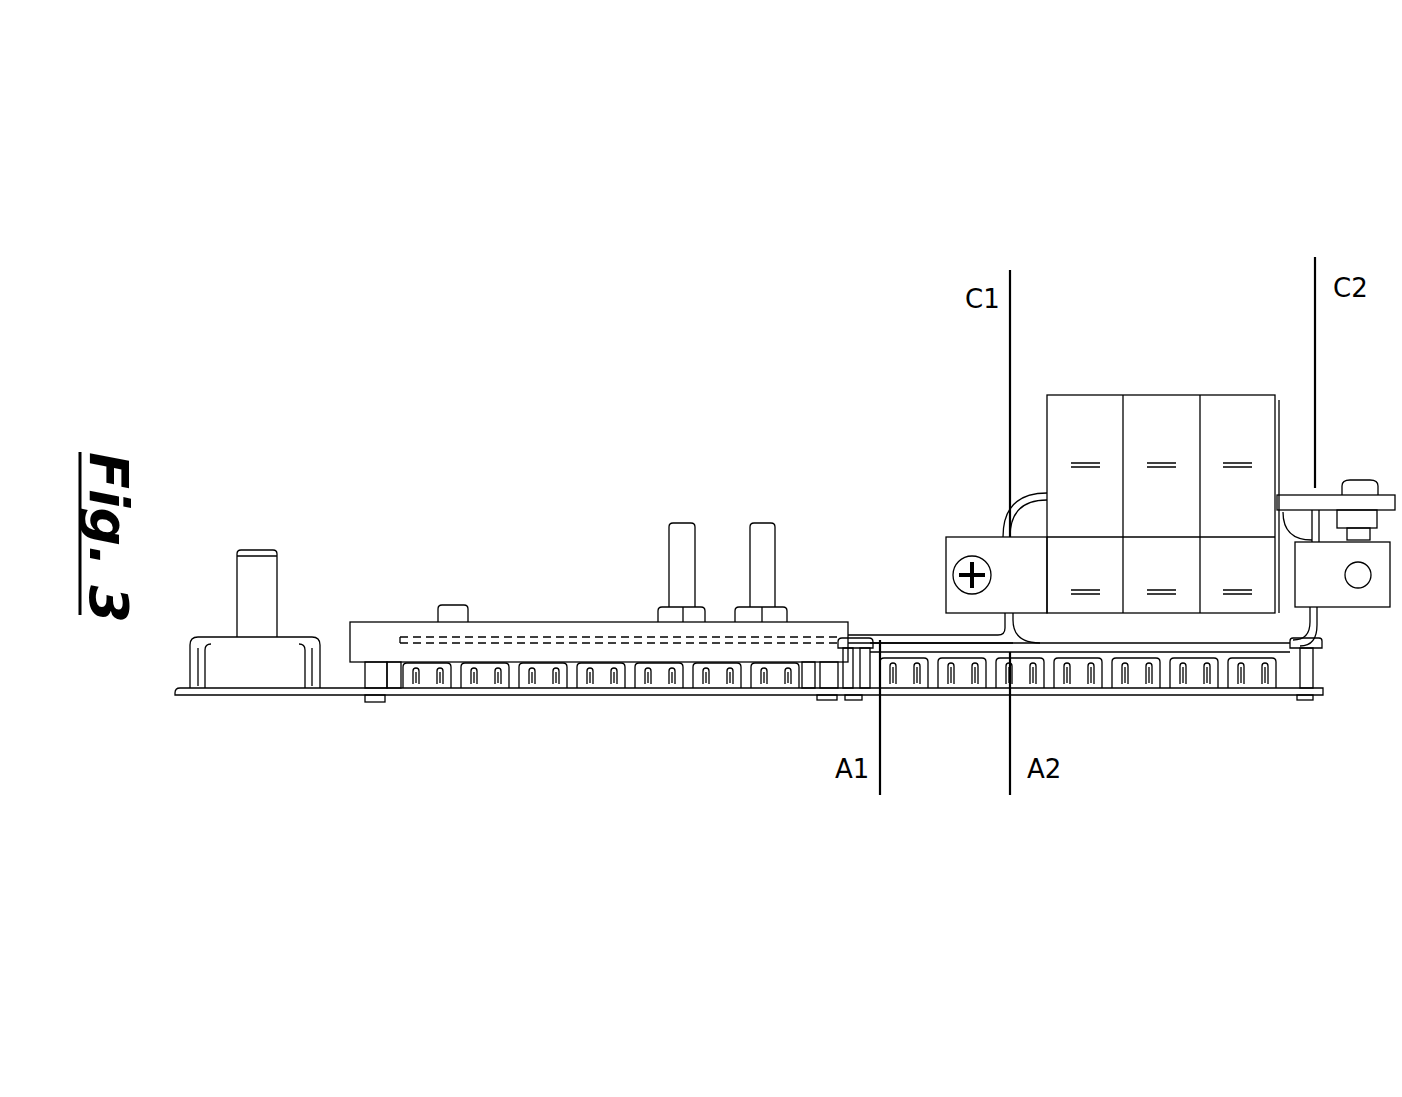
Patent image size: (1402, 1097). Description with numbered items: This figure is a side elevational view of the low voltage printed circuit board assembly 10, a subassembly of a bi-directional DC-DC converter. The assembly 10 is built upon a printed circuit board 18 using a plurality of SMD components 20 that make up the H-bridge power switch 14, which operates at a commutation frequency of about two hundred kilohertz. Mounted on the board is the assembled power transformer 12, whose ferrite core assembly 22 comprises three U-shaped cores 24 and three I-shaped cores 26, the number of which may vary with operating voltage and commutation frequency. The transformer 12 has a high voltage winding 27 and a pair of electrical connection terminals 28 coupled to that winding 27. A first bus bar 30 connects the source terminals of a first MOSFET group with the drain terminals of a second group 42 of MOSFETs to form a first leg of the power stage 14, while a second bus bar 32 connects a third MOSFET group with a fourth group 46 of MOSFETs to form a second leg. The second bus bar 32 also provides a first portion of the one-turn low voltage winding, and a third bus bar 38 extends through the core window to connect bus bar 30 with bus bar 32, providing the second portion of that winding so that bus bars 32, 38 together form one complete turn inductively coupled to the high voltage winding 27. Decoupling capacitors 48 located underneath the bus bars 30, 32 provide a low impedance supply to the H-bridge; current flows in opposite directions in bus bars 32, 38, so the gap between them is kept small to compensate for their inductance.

The low voltage printed circuit board assembly 10 is at (680, 248).
The power transformer 12 is at (1173, 494).
The H-bridge power switch 14 is at (595, 622).
The printed circuit board 18 is at (175, 690).
The SMD components 20 is at (348, 672).
The ferrite core assembly 22 is at (1163, 447).
The U-shaped cores 24 is at (1163, 451).
The I-shaped cores 26 is at (1163, 578).
The high voltage winding 27 is at (1040, 523).
The electrical connection terminals 28 is at (1337, 585).
The first bus bar 30 is at (552, 622).
The second bus bar 32 is at (1293, 648).
The third bus bar 38 is at (897, 633).
The second group of MOSFETs 42 is at (652, 700).
The fourth group of MOSFETs 46 is at (1115, 715).
The decoupling capacitors 48 is at (820, 750).